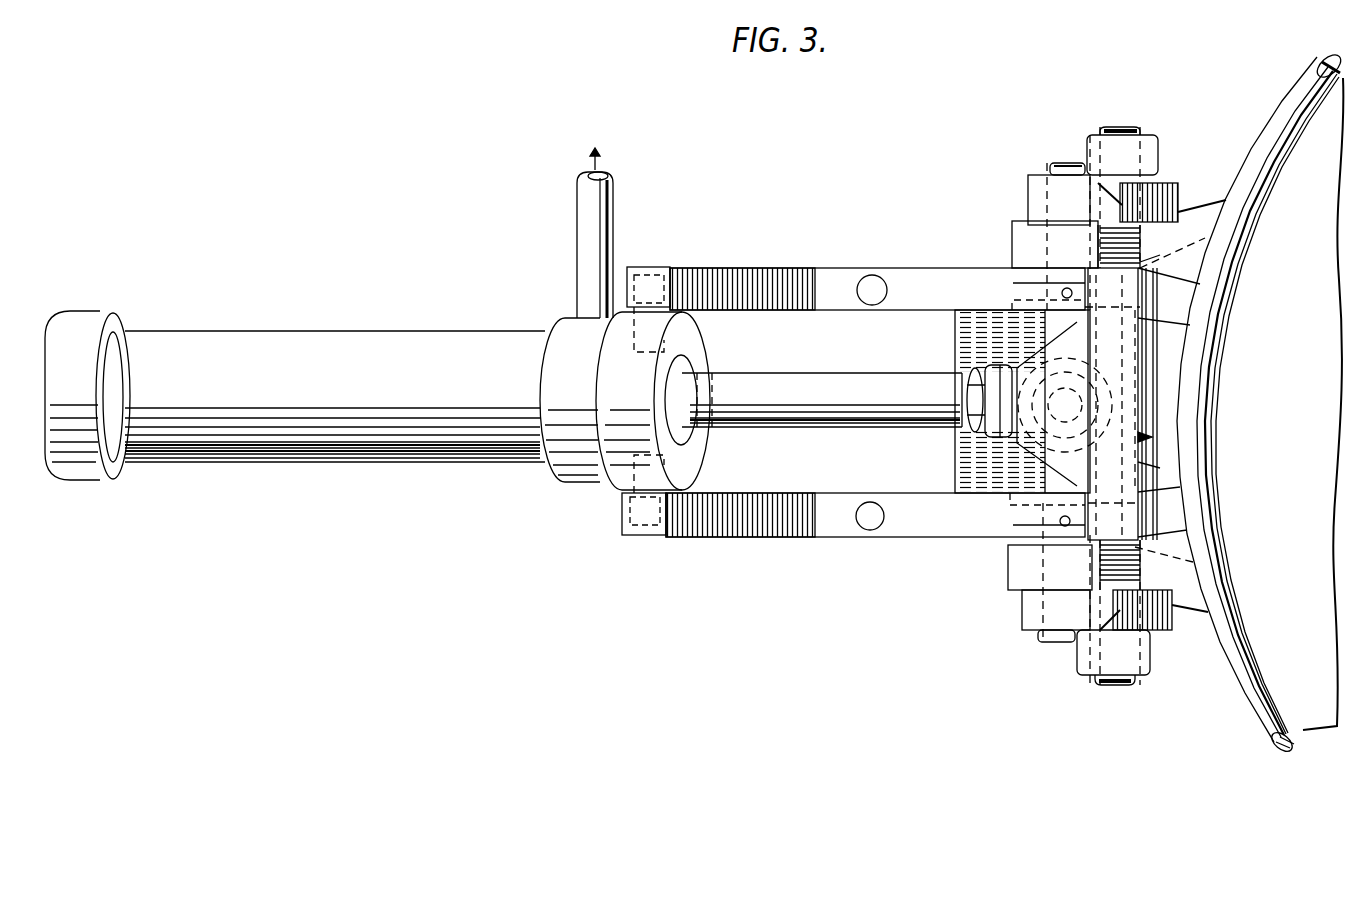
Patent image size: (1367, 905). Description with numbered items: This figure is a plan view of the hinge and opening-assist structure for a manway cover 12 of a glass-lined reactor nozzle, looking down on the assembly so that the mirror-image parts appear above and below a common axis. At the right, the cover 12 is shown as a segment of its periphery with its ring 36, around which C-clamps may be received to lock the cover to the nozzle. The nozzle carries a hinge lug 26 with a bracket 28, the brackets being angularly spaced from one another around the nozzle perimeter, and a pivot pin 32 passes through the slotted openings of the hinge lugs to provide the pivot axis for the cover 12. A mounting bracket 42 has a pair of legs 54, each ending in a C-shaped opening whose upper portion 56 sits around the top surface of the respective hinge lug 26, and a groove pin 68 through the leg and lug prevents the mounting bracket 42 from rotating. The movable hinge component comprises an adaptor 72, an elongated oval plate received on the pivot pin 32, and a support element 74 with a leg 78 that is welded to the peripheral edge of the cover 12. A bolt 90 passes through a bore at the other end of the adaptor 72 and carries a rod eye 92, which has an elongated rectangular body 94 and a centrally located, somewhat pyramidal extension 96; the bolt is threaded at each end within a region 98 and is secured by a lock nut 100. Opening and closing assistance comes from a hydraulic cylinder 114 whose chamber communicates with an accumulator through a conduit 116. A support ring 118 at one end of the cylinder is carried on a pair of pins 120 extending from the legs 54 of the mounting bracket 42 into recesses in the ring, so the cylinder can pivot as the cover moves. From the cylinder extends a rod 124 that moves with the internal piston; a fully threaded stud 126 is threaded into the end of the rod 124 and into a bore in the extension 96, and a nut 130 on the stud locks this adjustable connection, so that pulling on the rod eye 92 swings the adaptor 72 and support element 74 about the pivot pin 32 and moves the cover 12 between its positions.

The cover 12 is at (1312, 730).
The hinge lug 26 is at (1014, 300).
The bracket 28 is at (1185, 309).
The pivot pin 32 is at (1040, 174).
The ring 36 is at (1270, 125).
The mounting bracket 42 is at (875, 541).
The leg 54 is at (932, 275).
The upper portion 56 is at (1040, 268).
The groove pin 68 is at (1062, 292).
The adaptor 72 is at (1168, 186).
The support element 74 is at (1012, 226).
The leg 78 is at (1196, 214).
The bolt 90 is at (1138, 266).
The rod eye 92 is at (1152, 437).
The elongated rectangular body 94 is at (1160, 466).
The extension 96 is at (1040, 446).
The region 98 is at (1100, 240).
The lock nut 100 is at (1088, 146).
The hydraulic cylinder 114 is at (375, 336).
The conduit 116 is at (612, 224).
The support ring 118 is at (608, 478).
The pin 120 is at (684, 268).
The rod 124 is at (823, 378).
The stud 126 is at (965, 378).
The nut 130 is at (985, 430).